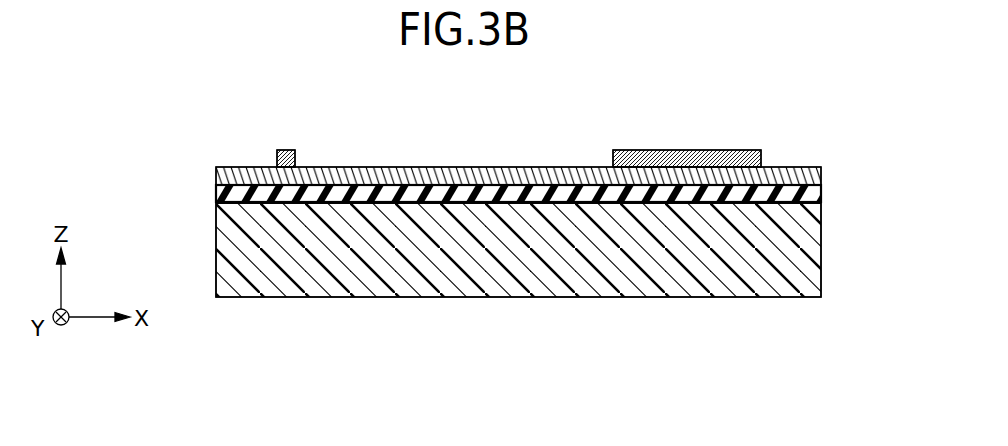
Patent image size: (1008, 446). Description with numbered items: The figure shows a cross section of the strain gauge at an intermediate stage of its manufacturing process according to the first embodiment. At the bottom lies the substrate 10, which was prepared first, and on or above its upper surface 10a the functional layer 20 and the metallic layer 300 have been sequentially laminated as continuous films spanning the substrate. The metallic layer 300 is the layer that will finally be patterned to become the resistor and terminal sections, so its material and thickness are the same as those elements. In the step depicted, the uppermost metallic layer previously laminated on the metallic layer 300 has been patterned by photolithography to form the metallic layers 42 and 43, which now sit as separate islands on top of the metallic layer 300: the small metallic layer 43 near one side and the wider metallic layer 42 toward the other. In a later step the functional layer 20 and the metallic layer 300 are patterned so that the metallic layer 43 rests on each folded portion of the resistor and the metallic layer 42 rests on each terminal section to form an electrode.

The substrate 10 is at (810, 248).
The upper surface of the substrate 10a is at (244, 201).
The functional layer 20 is at (810, 193).
The metallic layer 300 is at (810, 177).
The metallic layer 42 is at (762, 153).
The metallic layer 43 is at (282, 150).